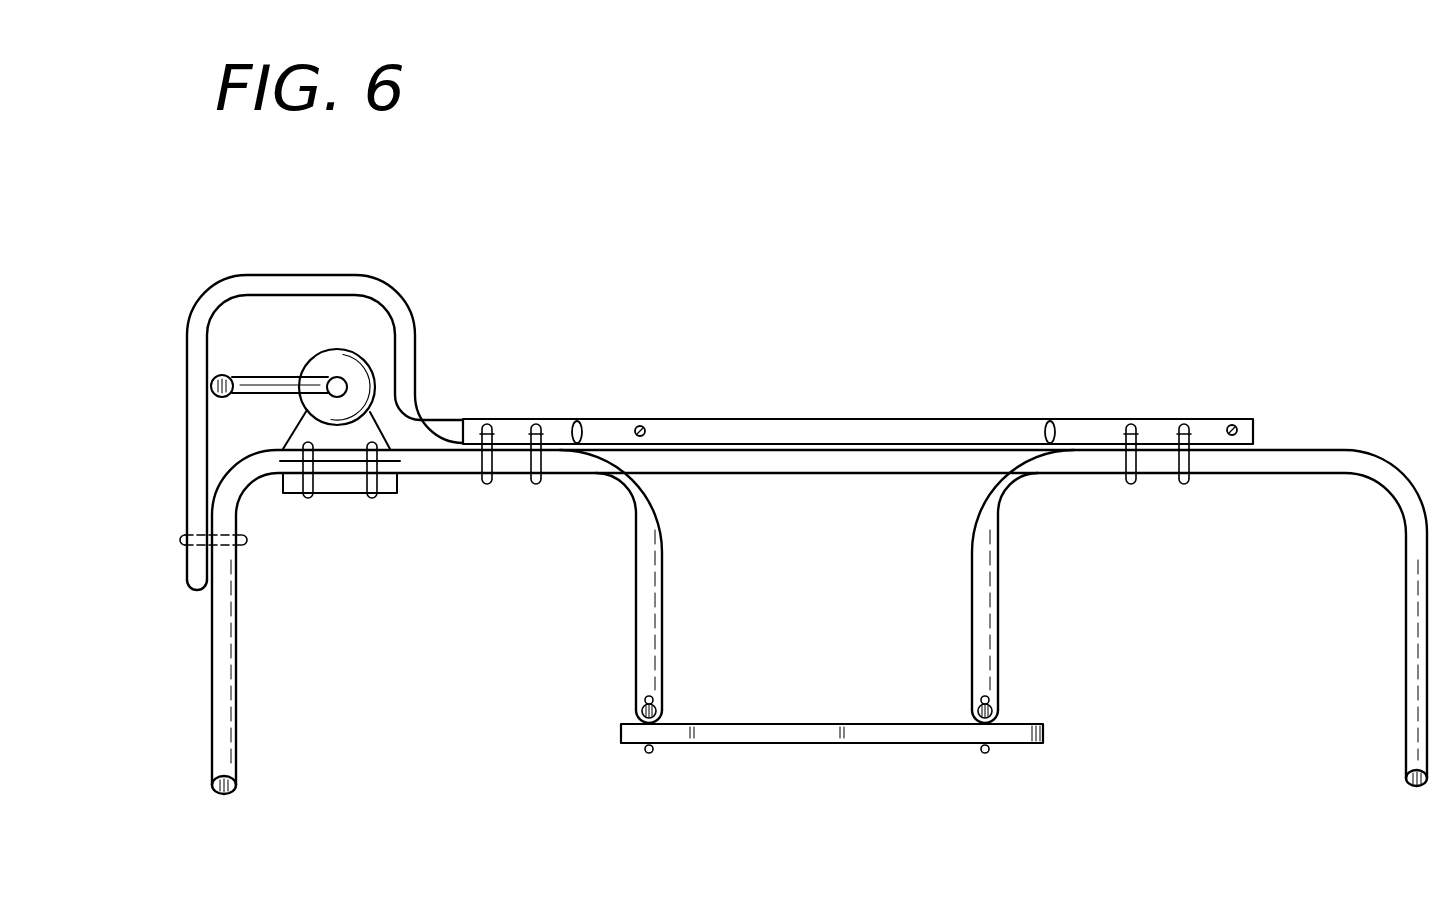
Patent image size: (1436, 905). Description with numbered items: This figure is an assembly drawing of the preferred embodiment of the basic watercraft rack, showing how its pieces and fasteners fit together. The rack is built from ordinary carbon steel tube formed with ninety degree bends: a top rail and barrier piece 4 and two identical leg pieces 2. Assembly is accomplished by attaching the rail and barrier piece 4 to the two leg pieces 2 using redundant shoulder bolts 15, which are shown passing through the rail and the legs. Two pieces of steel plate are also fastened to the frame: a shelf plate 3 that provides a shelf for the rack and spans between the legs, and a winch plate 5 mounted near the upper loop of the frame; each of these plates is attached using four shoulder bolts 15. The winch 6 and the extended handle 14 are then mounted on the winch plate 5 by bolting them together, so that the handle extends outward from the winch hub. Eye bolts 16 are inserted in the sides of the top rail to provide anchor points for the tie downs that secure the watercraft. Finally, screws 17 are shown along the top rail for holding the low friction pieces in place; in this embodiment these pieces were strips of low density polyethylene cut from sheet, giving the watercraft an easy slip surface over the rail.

The leg piece 2 is at (222, 687).
The shelf plate 3 is at (829, 745).
The top rail and barrier piece 4 is at (863, 428).
The winch plate 5 is at (343, 498).
The winch 6 is at (347, 368).
The extended handle 14 is at (352, 386).
The shoulder bolt 15 is at (537, 422).
The eye bolt 16 is at (578, 420).
The screw 17 is at (643, 426).